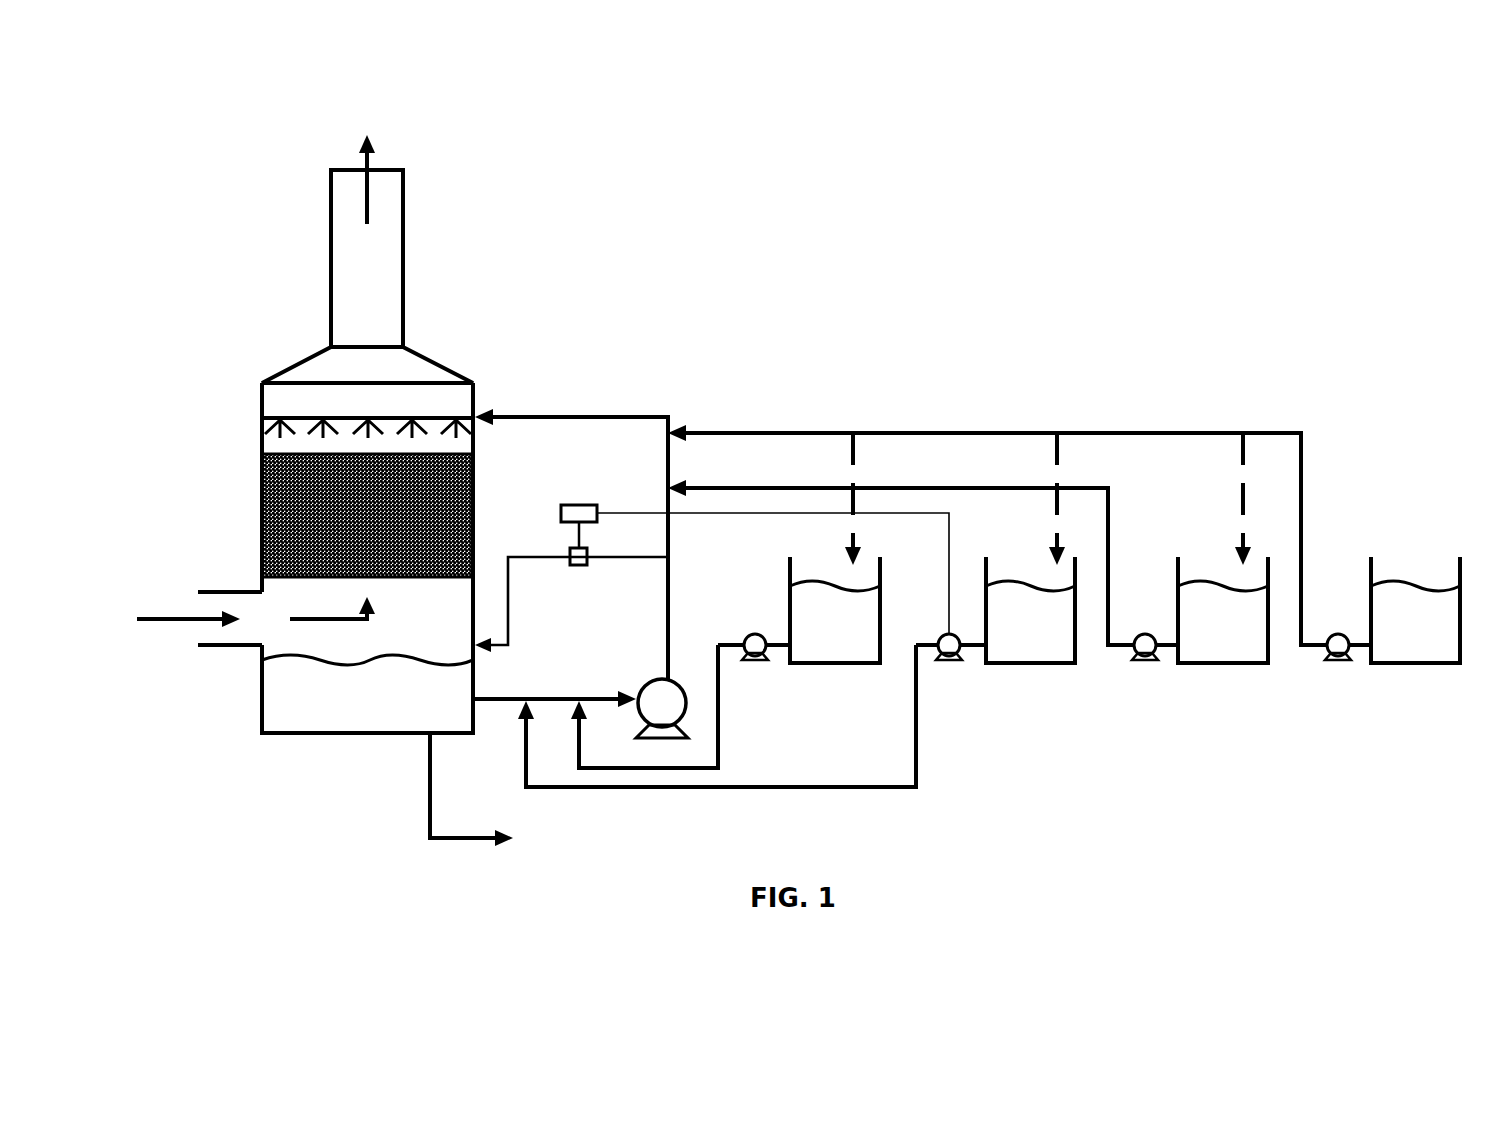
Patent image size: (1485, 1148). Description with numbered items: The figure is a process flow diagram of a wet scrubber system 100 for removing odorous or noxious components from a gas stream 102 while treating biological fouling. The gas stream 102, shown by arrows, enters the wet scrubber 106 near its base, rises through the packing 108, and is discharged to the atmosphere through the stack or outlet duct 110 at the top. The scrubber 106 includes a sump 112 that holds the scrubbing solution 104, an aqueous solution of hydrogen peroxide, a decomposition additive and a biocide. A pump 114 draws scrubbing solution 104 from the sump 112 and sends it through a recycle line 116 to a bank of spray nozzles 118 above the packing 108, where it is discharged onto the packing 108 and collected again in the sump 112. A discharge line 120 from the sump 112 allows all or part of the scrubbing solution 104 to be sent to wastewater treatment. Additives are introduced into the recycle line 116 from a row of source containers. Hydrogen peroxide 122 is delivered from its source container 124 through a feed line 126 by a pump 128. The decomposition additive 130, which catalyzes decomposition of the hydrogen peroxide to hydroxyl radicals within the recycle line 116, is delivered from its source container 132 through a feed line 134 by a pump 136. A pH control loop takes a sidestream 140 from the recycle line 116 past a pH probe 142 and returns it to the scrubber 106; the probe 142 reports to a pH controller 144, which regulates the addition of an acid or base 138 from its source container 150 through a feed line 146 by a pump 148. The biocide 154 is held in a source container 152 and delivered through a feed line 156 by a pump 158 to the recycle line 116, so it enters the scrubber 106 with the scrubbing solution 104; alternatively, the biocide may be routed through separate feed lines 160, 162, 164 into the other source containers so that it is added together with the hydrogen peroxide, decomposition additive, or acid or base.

The wet scrubber system 100 is at (763, 210).
The gas stream 102 is at (372, 158).
The scrubbing solution 104 is at (285, 692).
The wet scrubber 106 is at (262, 397).
The packing 108 is at (305, 522).
The stack or outlet duct 110 is at (331, 283).
The sump 112 is at (378, 740).
The pump 114 is at (645, 685).
The recycle line 116 is at (560, 416).
The spray nozzles 118 is at (392, 415).
The discharge line 120 is at (470, 842).
The hydrogen peroxide 122 is at (840, 612).
The source container 124 is at (820, 665).
The feed line 126 is at (721, 753).
The pump 128 is at (752, 635).
The decomposition additive 130 is at (1223, 645).
The source container 132 is at (1183, 665).
The feed line 134 is at (1108, 505).
The pump 136 is at (1150, 665).
The acid or base 138 is at (1025, 635).
The sidestream 140 is at (508, 622).
The pH probe 142 is at (573, 548).
The pH controller 144 is at (580, 505).
The feed line 146 is at (855, 790).
The pump 148 is at (948, 660).
The acid or base source container 150 is at (1145, 660).
The source container 152 is at (1378, 665).
The biocide 154 is at (1433, 612).
The feed line 156 is at (1301, 445).
The pump 158 is at (1340, 660).
The feed line 160 is at (853, 452).
The feed line 162 is at (1057, 452).
The feed line 164 is at (1243, 452).